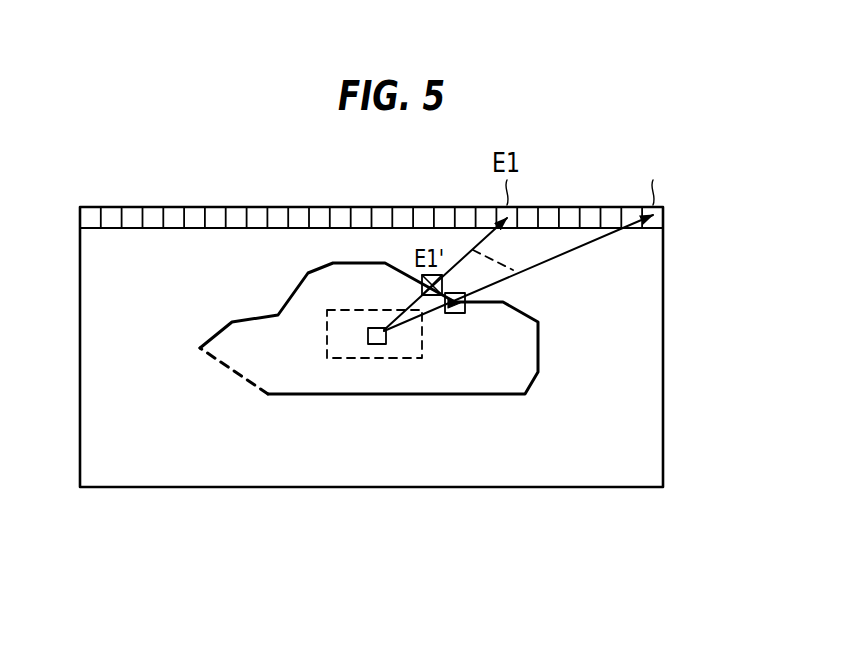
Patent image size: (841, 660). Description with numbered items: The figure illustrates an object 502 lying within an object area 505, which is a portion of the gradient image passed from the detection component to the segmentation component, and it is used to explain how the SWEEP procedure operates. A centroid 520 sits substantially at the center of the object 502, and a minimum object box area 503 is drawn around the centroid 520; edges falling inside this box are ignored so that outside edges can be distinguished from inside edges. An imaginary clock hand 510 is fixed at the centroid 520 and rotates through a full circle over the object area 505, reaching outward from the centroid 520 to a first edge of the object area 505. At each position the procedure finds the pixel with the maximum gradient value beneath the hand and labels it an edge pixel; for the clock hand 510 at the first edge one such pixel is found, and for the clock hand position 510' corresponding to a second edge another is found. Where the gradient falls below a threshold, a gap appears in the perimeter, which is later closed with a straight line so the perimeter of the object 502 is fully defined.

The object area 505 is at (663, 386).
The object 502 is at (538, 355).
The minimum object box area 503 is at (327, 347).
The centroid 520 is at (367, 334).
The imaginary clock hand 510 is at (448, 209).
The imaginary clock hand position 510' is at (526, 246).